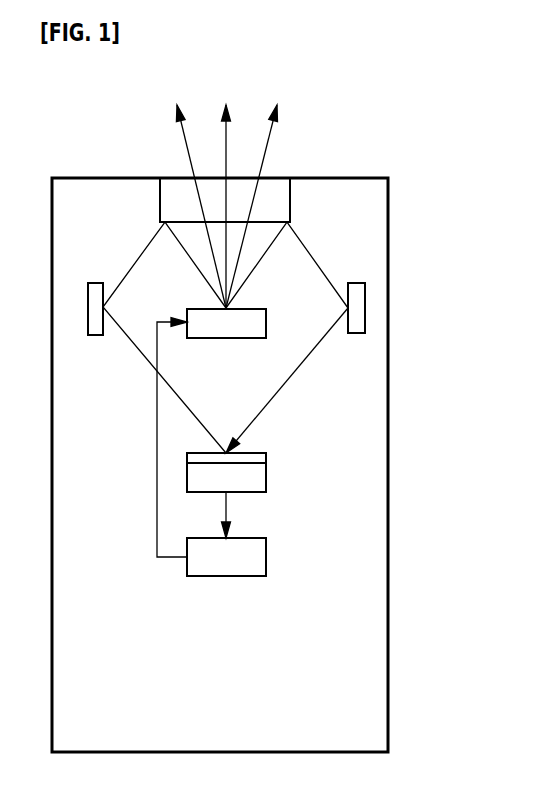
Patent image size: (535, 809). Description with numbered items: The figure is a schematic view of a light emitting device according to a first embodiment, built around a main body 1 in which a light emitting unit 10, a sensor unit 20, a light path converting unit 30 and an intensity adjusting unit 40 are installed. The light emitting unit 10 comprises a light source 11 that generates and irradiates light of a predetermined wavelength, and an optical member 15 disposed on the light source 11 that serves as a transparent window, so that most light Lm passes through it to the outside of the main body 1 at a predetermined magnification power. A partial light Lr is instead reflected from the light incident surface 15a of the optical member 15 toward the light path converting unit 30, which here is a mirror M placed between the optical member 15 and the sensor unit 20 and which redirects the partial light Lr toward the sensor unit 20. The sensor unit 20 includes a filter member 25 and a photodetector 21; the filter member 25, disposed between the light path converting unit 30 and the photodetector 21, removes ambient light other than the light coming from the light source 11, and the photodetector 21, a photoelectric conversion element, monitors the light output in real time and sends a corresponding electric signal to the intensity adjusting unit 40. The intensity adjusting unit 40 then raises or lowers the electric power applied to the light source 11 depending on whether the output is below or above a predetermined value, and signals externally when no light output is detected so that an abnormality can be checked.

The main body 1 is at (388, 620).
The light emitting unit 10 is at (330, 258).
The light source 11 is at (266, 312).
The optical member 15 is at (290, 198).
The light incident surface 15a is at (185, 222).
The sensor unit 20 is at (282, 470).
The photodetector 21 is at (266, 478).
The filter member 25 is at (266, 457).
The light path converting unit 30 is at (386, 300).
The intensity adjusting unit 40 is at (266, 557).
The mirror M is at (365, 320).
The most light Lm is at (272, 142).
The partial light Lr is at (298, 368).